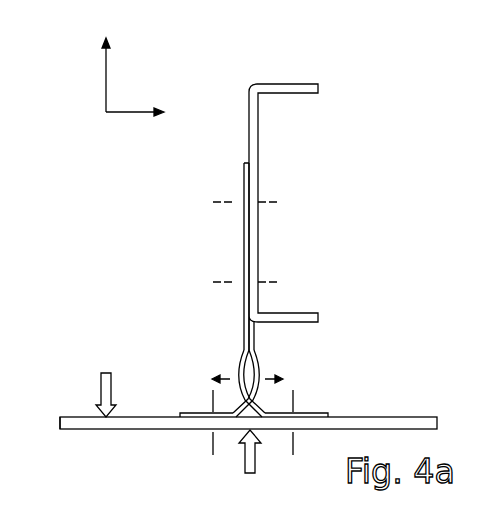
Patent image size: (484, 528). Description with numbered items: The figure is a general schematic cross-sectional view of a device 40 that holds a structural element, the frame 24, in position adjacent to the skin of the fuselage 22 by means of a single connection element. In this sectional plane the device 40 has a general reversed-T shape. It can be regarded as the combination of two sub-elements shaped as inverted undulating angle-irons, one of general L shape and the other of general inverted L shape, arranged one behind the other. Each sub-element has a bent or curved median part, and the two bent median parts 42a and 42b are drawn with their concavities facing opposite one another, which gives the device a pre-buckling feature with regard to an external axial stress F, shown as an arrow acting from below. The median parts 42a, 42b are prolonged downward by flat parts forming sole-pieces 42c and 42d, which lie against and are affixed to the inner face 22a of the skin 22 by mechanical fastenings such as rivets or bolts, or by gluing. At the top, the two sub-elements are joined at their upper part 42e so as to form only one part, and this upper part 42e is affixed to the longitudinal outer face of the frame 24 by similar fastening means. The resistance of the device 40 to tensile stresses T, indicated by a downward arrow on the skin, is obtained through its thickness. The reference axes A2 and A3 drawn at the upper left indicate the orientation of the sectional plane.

The skin of the fuselage 22 is at (360, 423).
The inner face of the skin 22a is at (88, 417).
The frame 24 is at (249, 112).
The device 40 is at (144, 262).
The bent median part 42a is at (243, 366).
The bent median part 42b is at (258, 373).
The sole-piece 42c is at (174, 413).
The sole-piece 42d is at (305, 413).
The upper part 42e is at (244, 238).
The horizontal axis A2 is at (130, 113).
The vertical axis A3 is at (108, 78).
The tensile stresses T is at (100, 374).
The external axial stress F is at (246, 460).